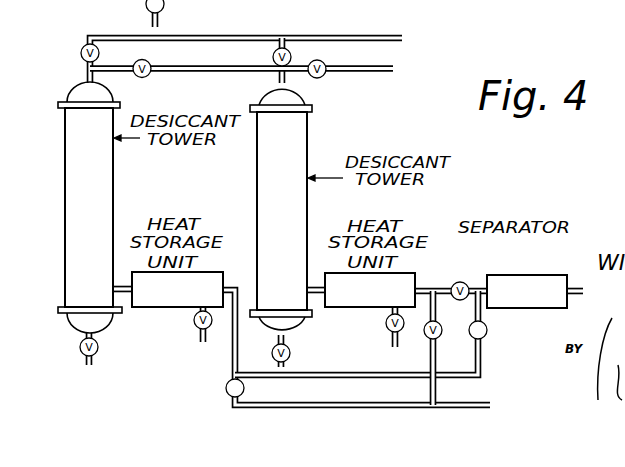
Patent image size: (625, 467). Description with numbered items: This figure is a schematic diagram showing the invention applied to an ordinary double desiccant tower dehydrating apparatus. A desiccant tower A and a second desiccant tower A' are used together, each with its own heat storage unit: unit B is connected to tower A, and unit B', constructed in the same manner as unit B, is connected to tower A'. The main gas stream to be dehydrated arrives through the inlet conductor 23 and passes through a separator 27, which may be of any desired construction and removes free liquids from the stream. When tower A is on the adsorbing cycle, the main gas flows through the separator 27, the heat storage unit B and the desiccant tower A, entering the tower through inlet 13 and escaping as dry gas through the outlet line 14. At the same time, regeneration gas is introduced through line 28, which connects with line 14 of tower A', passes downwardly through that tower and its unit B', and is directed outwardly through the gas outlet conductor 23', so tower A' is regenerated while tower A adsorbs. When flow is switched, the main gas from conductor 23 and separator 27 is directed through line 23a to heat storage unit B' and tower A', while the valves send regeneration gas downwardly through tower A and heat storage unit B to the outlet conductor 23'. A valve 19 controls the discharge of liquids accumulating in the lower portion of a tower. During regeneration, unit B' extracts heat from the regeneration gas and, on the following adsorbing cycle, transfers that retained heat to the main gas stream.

The valve 19 is at (166, 5).
The line 28 is at (257, 36).
The outlet line 14 is at (93, 76).
The inlet 13 is at (318, 294).
The separator 27 is at (513, 274).
The inlet conductor 23 is at (568, 266).
The line 23a is at (481, 355).
The gas outlet conductor 23' is at (335, 356).
The desiccant tower A is at (306, 209).
The second desiccant tower A' is at (113, 207).
The heat storage unit B is at (370, 312).
The heat storage unit B' is at (177, 319).